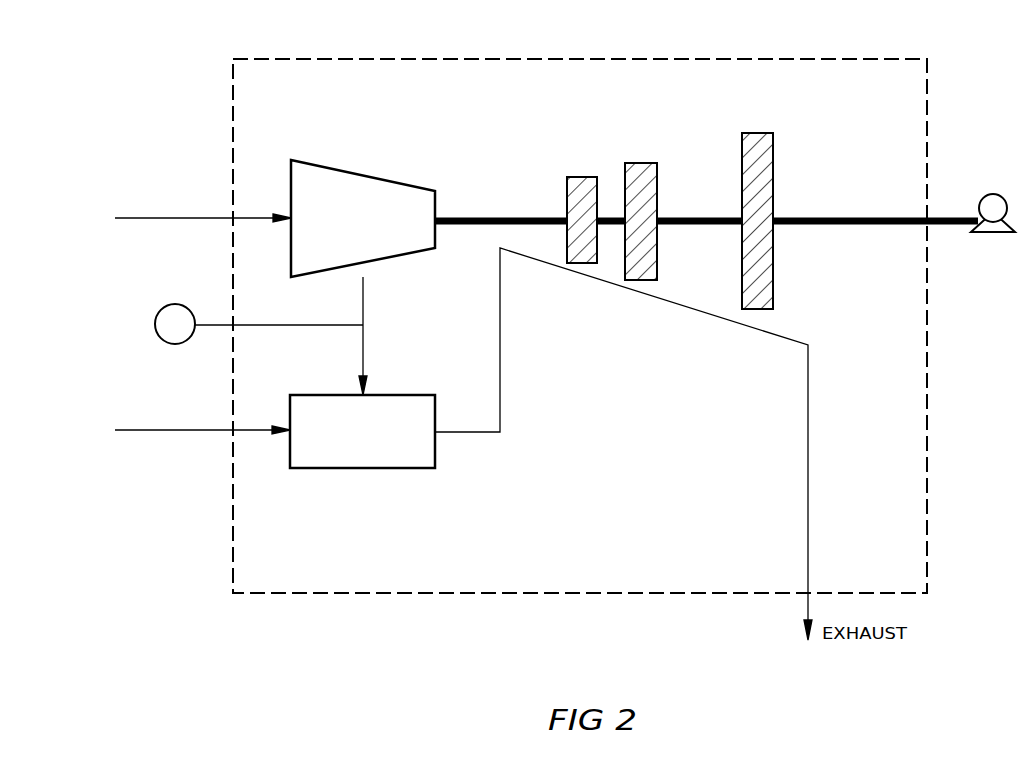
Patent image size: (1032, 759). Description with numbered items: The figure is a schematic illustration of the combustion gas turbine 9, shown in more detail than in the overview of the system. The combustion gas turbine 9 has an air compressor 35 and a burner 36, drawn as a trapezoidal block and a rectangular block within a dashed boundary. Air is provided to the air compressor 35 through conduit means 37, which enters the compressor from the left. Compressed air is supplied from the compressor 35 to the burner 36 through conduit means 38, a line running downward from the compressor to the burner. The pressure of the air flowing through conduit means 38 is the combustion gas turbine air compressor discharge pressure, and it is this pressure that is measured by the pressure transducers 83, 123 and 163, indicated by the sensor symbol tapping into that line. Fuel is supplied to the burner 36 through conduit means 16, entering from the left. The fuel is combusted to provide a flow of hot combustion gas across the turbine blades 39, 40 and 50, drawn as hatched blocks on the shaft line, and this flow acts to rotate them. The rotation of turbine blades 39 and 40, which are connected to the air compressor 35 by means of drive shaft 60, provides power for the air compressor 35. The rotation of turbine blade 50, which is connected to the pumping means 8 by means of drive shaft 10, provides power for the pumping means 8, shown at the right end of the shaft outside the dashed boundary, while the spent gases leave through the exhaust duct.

The combustion gas turbine 9 is at (580, 59).
The air compressor 35 is at (365, 176).
The conduit means 37 is at (183, 220).
The conduit means 38 is at (365, 295).
The burner 36 is at (367, 470).
The conduit means 16 is at (185, 432).
The drive shaft 60 is at (490, 216).
The turbine blade 39 is at (580, 176).
The turbine blade 40 is at (638, 162).
The turbine blade 50 is at (755, 132).
The drive shaft 10 is at (945, 218).
The pumping means 8 is at (989, 194).
The pressure transducer 83 is at (231, 352).
The pressure transducer 123 is at (231, 352).
The pressure transducer 163 is at (175, 346).